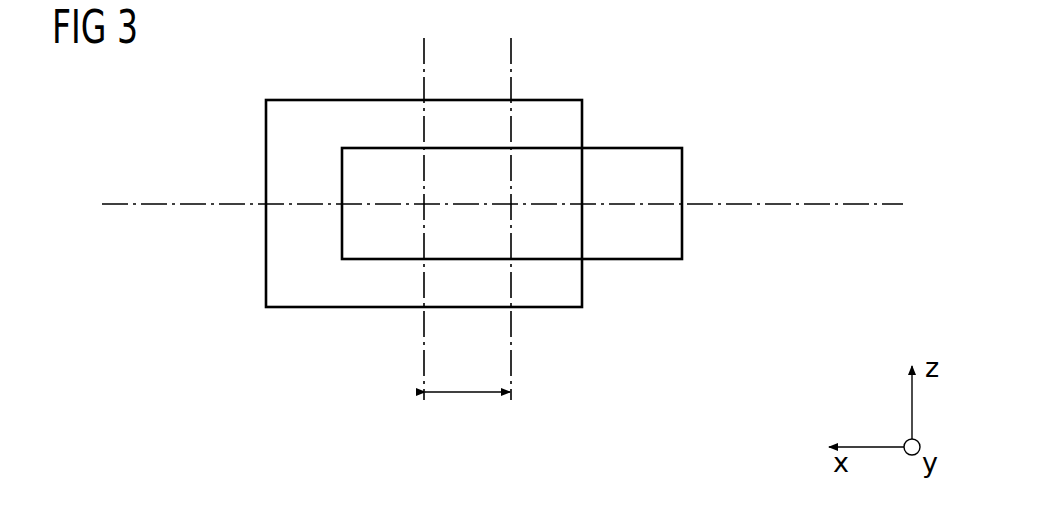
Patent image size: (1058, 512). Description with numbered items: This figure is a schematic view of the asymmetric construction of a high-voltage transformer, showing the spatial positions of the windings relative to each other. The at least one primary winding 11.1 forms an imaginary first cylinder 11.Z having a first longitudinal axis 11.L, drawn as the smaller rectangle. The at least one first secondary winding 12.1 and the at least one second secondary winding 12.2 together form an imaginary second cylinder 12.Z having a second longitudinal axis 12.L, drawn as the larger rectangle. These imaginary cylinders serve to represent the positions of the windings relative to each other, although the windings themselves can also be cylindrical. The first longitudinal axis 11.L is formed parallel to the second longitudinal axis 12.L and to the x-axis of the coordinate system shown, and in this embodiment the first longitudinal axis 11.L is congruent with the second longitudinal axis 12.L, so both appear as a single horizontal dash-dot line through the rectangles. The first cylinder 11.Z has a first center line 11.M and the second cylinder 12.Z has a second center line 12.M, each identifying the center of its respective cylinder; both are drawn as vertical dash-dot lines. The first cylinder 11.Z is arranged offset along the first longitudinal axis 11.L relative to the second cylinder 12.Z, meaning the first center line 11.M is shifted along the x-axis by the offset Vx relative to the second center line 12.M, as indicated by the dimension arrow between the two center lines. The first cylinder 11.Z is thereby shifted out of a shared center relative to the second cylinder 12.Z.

The first longitudinal axis 11.L is at (522, 164).
The second longitudinal axis 12.L is at (888, 203).
The second center line 12.M is at (422, 52).
The first center line 11.M is at (513, 350).
The second cylinder 12.Z is at (312, 203).
The first secondary winding 12.1 is at (312, 203).
The second secondary winding 12.2 is at (266, 130).
The first cylinder 11.Z is at (588, 203).
The primary winding 11.1 is at (683, 236).
The offset Vx is at (465, 393).